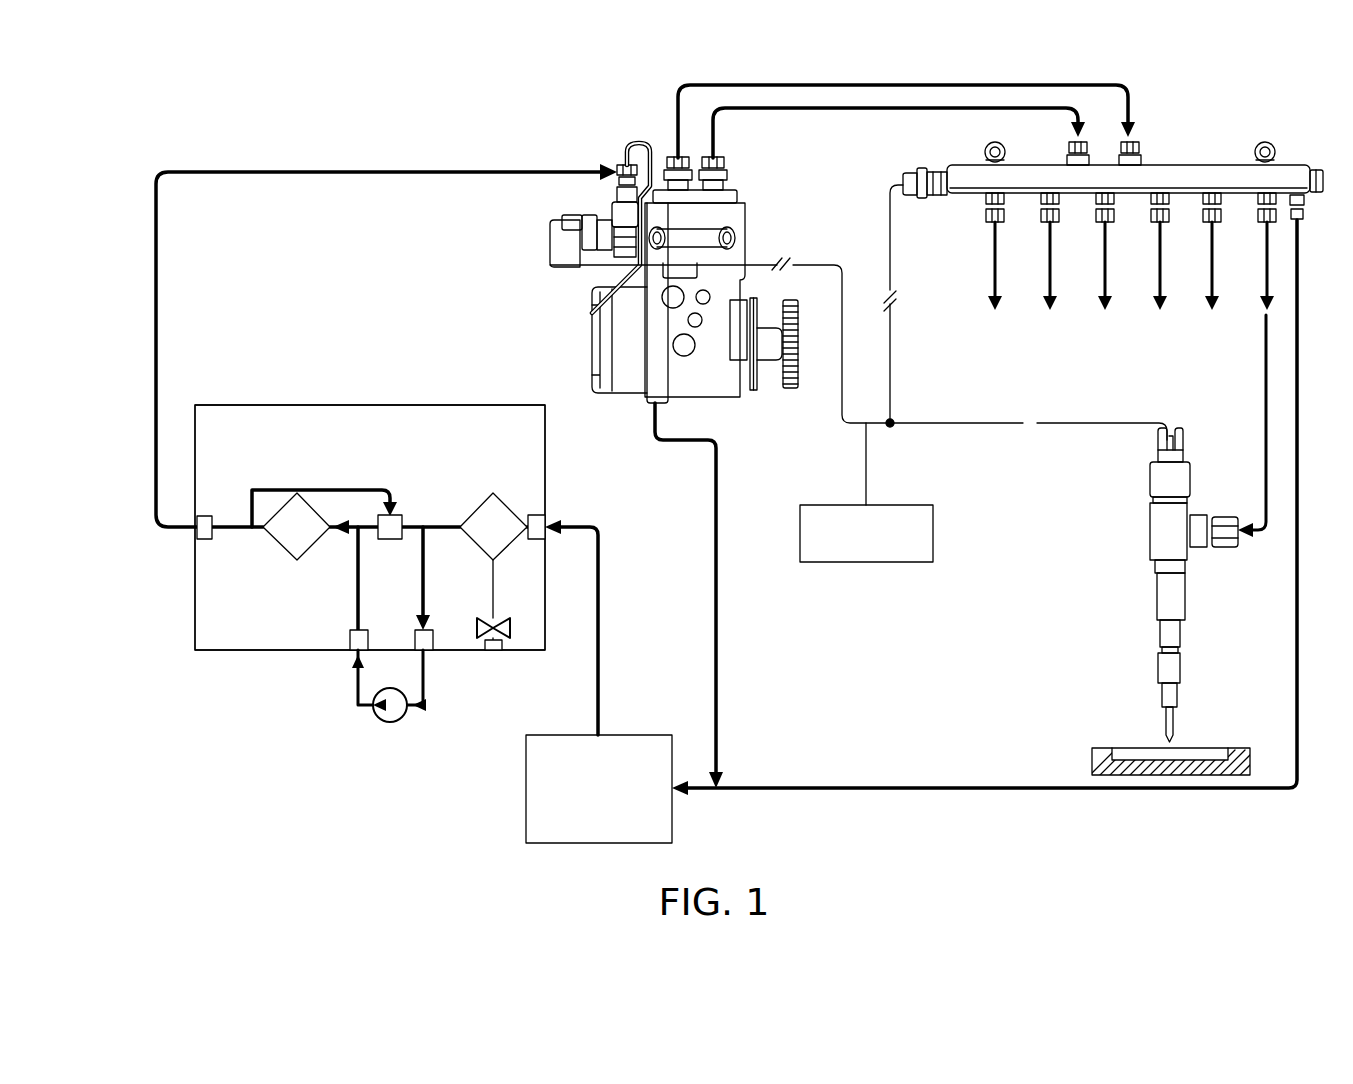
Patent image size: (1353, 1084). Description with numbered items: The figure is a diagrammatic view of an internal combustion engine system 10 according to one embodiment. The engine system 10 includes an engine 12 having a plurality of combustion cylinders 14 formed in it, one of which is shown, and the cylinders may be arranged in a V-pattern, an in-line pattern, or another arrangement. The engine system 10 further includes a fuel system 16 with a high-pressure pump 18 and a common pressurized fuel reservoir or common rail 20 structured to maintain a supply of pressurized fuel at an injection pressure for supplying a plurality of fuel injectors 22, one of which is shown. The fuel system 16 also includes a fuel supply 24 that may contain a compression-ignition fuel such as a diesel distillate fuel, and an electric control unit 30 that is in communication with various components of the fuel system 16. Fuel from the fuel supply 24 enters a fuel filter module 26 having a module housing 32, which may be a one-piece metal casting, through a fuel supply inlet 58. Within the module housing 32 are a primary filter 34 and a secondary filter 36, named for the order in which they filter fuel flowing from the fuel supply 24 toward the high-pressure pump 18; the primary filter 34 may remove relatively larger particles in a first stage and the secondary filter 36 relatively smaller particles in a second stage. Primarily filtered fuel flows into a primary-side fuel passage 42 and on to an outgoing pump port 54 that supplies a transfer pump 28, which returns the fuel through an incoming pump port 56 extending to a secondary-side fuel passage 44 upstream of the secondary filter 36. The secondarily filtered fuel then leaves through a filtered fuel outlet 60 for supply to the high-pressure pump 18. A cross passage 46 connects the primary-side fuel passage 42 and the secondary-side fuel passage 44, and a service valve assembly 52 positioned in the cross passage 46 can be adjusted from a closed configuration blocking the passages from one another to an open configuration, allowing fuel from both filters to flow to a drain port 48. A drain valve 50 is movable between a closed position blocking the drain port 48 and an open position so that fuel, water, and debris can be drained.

The internal combustion engine system 10 is at (108, 164).
The engine 12 is at (1092, 750).
The combustion cylinder 14 is at (1115, 758).
The fuel system 16 is at (108, 666).
The high-pressure pump 18 is at (583, 348).
The common rail 20 is at (1228, 165).
The fuel injector 22 is at (1187, 603).
The fuel supply 24 is at (526, 768).
The fuel filter module 26 is at (236, 664).
The transfer pump 28 is at (383, 725).
The electric control unit 30 is at (866, 562).
The module housing 32 is at (200, 616).
The primary filter 34 is at (470, 516).
The secondary filter 36 is at (271, 545).
The primary-side fuel passage 42 is at (441, 531).
The secondary-side fuel passage 44 is at (353, 531).
The cross passage 46 is at (410, 525).
The drain port 48 is at (496, 653).
The drain valve 50 is at (500, 618).
The service valve assembly 52 is at (386, 540).
The outgoing pump port 54 is at (431, 653).
The incoming pump port 56 is at (351, 653).
The fuel supply inlet 58 is at (530, 515).
The filtered fuel outlet 60 is at (205, 516).